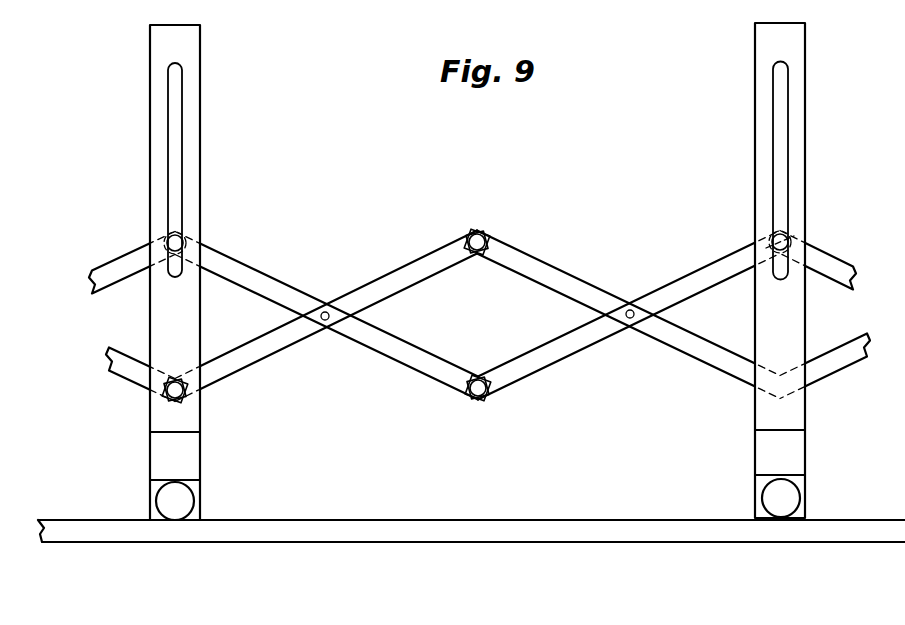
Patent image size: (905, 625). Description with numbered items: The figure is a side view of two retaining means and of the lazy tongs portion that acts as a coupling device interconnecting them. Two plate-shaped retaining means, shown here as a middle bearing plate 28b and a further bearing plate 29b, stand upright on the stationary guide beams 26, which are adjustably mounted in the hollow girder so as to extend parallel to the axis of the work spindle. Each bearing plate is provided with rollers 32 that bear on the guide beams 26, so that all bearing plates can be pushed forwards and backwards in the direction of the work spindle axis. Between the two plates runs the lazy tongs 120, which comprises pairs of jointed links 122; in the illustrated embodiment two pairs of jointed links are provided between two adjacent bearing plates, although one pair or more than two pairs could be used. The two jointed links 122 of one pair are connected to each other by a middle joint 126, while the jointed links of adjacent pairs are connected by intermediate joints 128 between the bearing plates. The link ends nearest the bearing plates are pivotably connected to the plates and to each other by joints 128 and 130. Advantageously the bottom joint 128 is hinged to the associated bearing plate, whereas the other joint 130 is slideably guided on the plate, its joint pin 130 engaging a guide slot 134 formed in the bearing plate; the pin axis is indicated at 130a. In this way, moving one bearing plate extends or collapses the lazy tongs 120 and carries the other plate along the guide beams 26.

The guide beam 26 is at (400, 532).
The middle bearing plate 28b is at (497, 270).
The left upright post 29b is at (144, 160).
The roller 32 is at (180, 504).
The lazy tongs 120 is at (493, 272).
The jointed link 122 is at (245, 352).
The middle joint 126 is at (630, 308).
The intermediate joint 128 is at (478, 378).
The joint pin 130 is at (787, 236).
The pivot pin axis 130a is at (800, 242).
The guide slot 134 is at (787, 140).